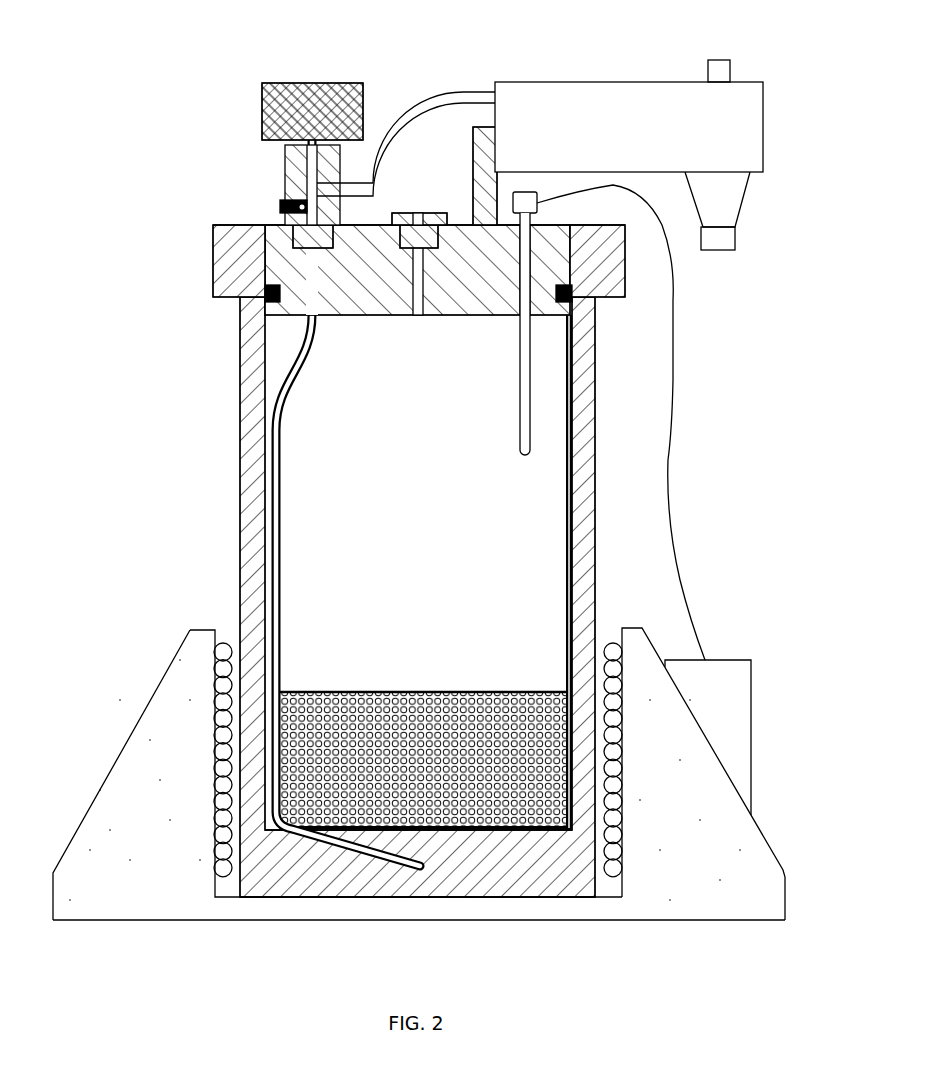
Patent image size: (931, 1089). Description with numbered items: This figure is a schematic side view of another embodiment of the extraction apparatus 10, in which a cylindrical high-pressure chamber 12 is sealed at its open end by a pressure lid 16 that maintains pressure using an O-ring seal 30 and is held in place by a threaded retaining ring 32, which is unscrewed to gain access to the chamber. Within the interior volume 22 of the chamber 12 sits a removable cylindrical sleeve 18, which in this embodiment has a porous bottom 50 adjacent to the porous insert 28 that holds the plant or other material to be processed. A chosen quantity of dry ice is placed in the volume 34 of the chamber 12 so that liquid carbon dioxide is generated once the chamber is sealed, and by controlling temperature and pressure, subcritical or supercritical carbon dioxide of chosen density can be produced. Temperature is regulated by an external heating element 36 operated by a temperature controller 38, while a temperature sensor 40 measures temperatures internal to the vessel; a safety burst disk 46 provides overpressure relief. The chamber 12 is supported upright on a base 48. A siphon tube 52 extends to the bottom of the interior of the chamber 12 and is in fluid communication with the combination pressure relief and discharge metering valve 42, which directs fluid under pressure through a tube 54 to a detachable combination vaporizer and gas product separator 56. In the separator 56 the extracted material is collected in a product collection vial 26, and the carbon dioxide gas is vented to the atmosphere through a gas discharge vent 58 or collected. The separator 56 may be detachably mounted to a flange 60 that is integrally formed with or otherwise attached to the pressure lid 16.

The extraction apparatus 10 is at (143, 318).
The high-pressure chamber 12 is at (238, 434).
The pressure lid 16 is at (274, 218).
The removable cylindrical sleeve 18 is at (277, 522).
The interior volume 22 is at (421, 854).
The product collection vial 26 is at (742, 235).
The porous insert 28 is at (326, 691).
The O-ring seal 30 is at (578, 292).
The threaded retaining ring 32 is at (209, 258).
The volume 34 is at (440, 517).
The external heating element 36 is at (613, 650).
The temperature controller 38 is at (734, 657).
The temperature sensor 40 is at (535, 355).
The combination pressure relief and discharge metering valve 42 is at (262, 114).
The safety burst disk 46 is at (433, 211).
The base 48 is at (108, 773).
The porous bottom 50 is at (303, 893).
The siphon tube 52 is at (230, 855).
The tube 54 is at (469, 81).
The combination vaporizer and gas product separator 56 is at (648, 81).
The gas discharge vent 58 is at (732, 60).
The flange 60 is at (470, 133).